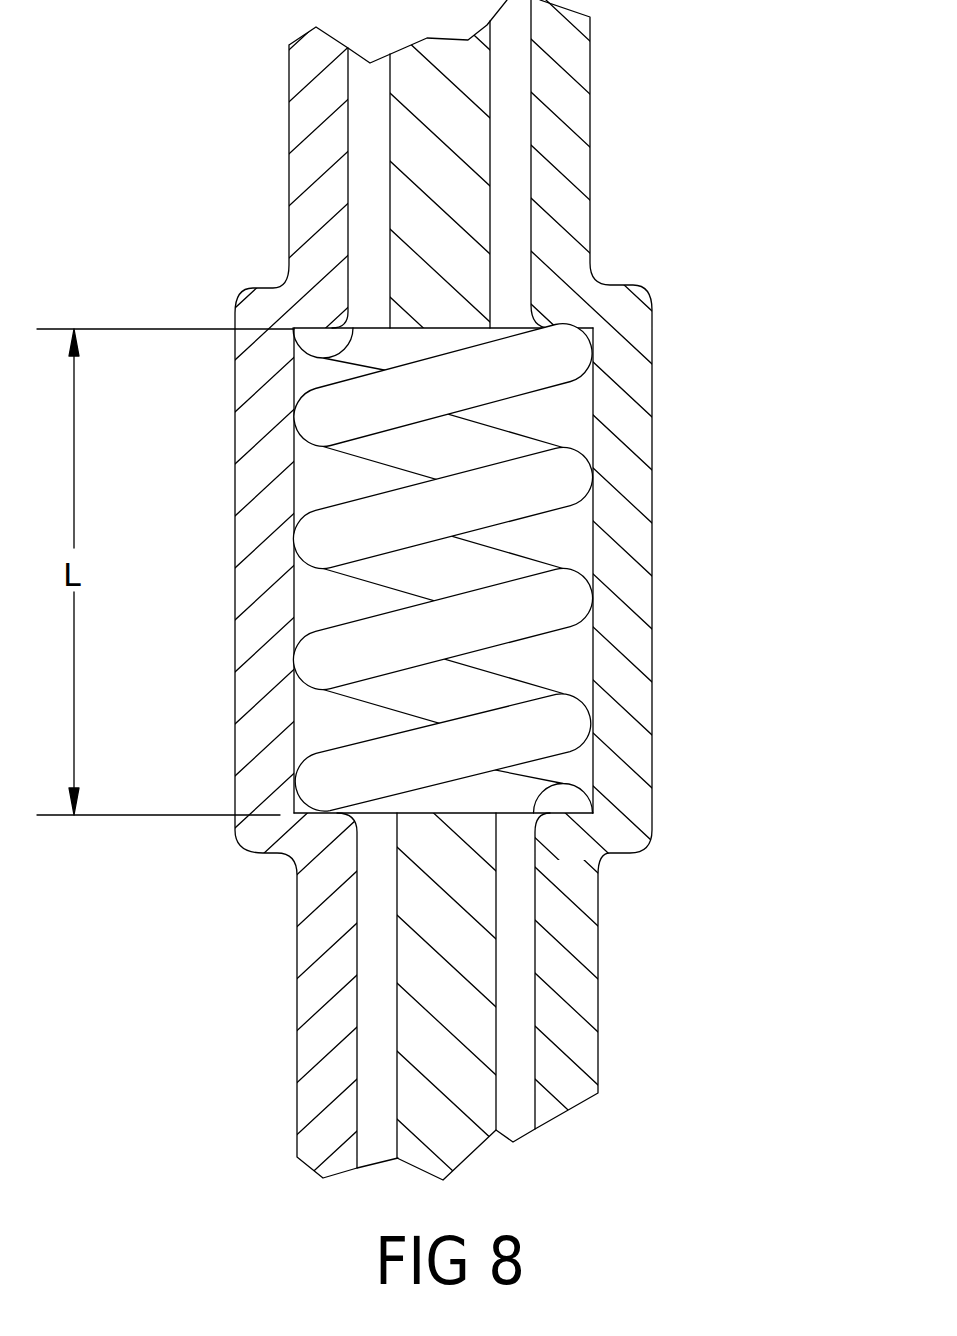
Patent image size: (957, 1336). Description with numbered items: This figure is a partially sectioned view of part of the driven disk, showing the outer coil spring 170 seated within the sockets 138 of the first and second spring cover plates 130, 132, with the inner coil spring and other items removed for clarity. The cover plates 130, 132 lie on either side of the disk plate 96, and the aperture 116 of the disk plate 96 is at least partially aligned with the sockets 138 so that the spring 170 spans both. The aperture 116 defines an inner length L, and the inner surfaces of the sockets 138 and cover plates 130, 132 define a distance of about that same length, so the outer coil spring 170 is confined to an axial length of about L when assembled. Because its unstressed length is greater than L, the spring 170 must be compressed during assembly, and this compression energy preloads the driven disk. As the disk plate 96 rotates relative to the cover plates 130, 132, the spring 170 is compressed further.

The disk plate 96 is at (458, 152).
The aperture 116 is at (446, 328).
The first spring cover plate 130 is at (571, 1017).
The second spring cover plate 132 is at (323, 994).
The socket 138 is at (640, 566).
The outer coil spring 170 is at (550, 617).